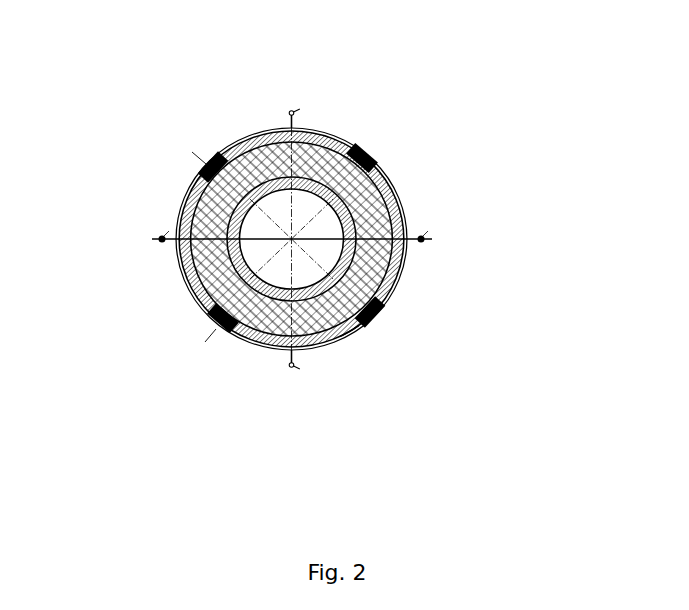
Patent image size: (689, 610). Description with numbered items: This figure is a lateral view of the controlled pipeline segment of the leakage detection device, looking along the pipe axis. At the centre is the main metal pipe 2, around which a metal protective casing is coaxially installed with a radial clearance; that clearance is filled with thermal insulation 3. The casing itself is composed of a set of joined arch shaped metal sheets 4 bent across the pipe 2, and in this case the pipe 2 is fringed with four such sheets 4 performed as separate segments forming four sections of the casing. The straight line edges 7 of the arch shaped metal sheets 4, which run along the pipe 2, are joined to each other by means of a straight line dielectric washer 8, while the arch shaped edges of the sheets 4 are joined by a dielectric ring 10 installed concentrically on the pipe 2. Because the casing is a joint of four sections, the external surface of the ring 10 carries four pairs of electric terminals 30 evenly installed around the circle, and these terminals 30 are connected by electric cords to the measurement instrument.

The main metal pipe 2 is at (356, 150).
The thermal insulation 3 is at (387, 173).
The arch shaped metal sheets 4 is at (250, 132).
The straight line edges 7 is at (387, 304).
The dielectric washer 8 is at (221, 334).
The dielectric ring 10 is at (360, 335).
The electric terminal 30 is at (160, 237).